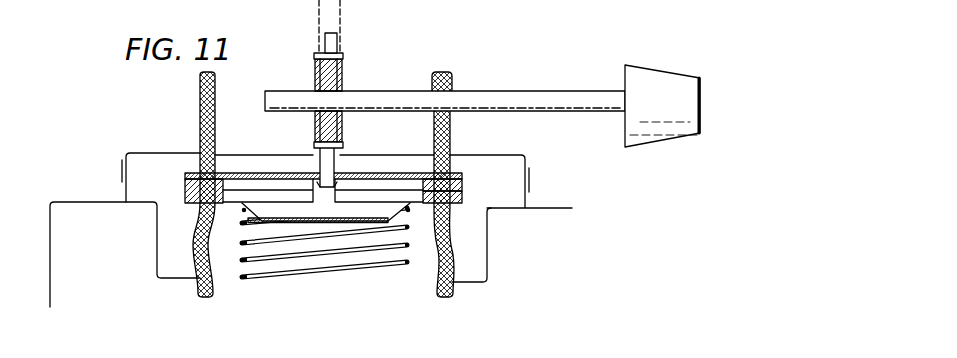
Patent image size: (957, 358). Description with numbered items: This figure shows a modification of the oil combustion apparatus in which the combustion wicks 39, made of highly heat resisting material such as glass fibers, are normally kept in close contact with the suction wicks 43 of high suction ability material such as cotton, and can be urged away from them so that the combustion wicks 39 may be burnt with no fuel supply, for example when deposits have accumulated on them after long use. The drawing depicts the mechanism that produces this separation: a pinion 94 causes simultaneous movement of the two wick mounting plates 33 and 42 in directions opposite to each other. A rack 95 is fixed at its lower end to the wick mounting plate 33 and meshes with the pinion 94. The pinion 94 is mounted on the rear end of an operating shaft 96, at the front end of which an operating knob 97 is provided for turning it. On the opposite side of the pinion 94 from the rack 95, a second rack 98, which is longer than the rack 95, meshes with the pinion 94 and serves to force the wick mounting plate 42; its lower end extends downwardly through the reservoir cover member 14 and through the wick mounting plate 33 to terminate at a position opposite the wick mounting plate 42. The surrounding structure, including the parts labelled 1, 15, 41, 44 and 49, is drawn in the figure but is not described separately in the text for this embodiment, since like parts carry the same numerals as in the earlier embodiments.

The machine frame 1 is at (50, 259).
The reservoir cover member 14 is at (508, 155).
The housing bottom wall 15 is at (467, 283).
The wick mounting plate 33 is at (374, 173).
The combustion wick 39 is at (457, 74).
The bearing block 41 is at (463, 188).
The wick mounting plate 42 is at (280, 221).
The suction wick 43 is at (452, 228).
The bearing block lower part 44 is at (462, 197).
The spring leaves 49 is at (406, 264).
The pinion 94 is at (315, 78).
The rack 95 is at (337, 40).
The operating shaft 96 is at (277, 89).
The operating knob 97 is at (653, 75).
The rack 98 is at (318, 35).